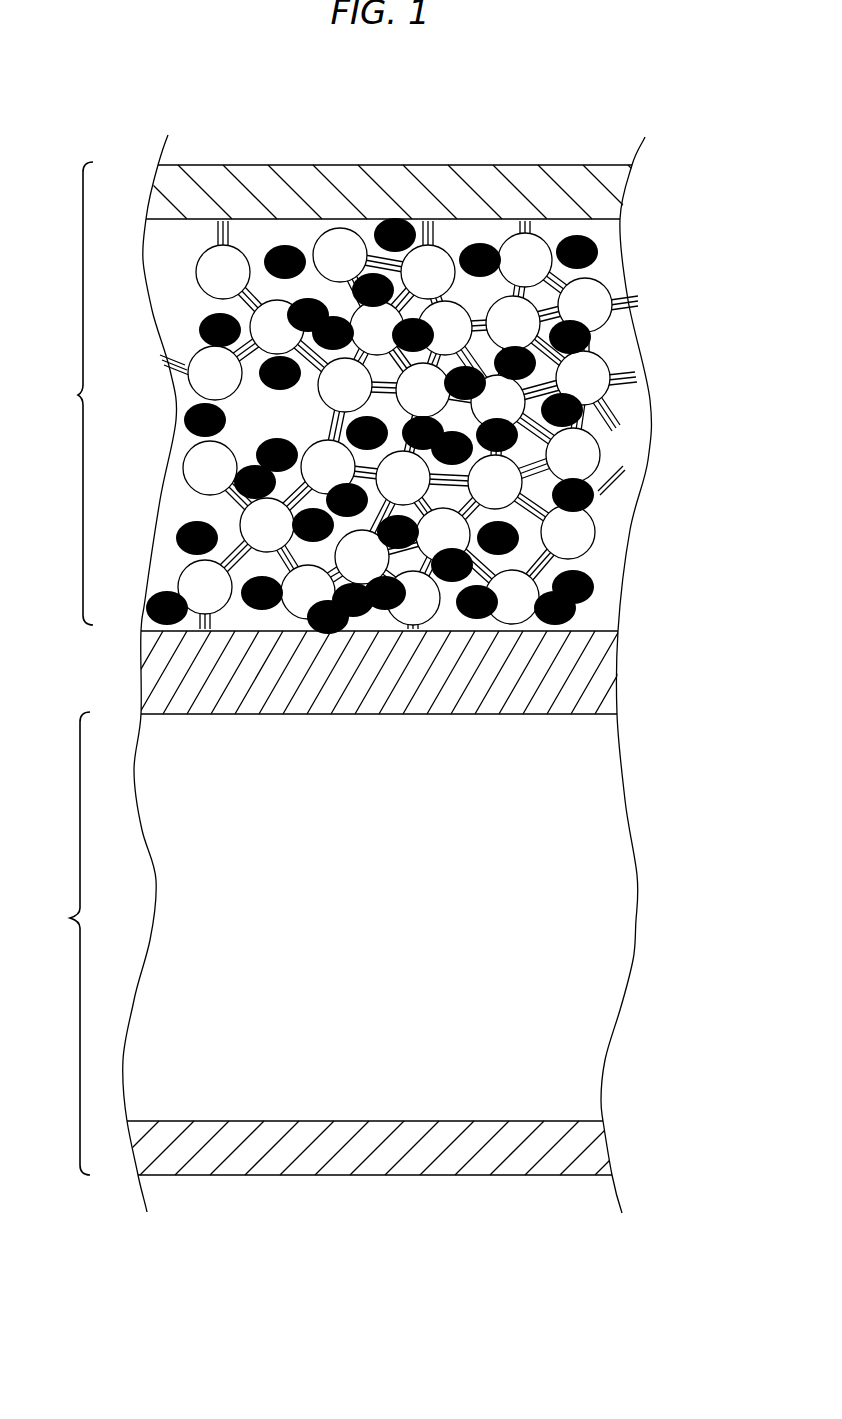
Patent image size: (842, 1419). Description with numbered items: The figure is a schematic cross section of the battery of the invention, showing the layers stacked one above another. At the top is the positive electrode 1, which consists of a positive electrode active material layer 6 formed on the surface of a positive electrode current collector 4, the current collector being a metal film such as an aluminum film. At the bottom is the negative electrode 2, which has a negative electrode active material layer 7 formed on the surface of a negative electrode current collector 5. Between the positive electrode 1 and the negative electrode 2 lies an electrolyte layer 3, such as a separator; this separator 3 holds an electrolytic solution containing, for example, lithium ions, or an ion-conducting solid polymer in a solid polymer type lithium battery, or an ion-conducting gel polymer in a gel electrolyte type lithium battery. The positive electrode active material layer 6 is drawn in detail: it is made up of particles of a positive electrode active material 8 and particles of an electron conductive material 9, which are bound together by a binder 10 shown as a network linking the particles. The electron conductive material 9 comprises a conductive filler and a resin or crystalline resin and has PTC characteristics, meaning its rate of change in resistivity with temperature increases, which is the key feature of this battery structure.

The positive electrode 1 is at (41, 414).
The negative electrode 2 is at (41, 959).
The electrolyte layer 3 is at (157, 665).
The positive electrode current collector 4 is at (603, 186).
The negative electrode current collector 5 is at (598, 1157).
The positive electrode active material layer 6 is at (425, 426).
The negative electrode active material layer 7 is at (612, 876).
The positive electrode active material 8 is at (605, 305).
The electron conductive material 9 is at (590, 497).
The binder 10 is at (606, 232).